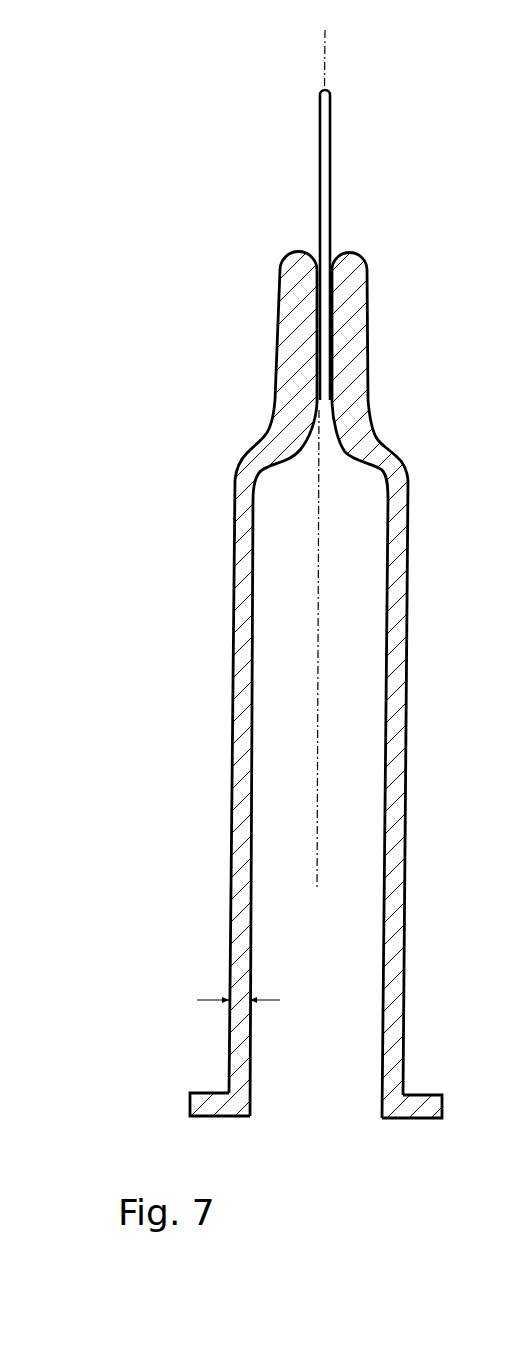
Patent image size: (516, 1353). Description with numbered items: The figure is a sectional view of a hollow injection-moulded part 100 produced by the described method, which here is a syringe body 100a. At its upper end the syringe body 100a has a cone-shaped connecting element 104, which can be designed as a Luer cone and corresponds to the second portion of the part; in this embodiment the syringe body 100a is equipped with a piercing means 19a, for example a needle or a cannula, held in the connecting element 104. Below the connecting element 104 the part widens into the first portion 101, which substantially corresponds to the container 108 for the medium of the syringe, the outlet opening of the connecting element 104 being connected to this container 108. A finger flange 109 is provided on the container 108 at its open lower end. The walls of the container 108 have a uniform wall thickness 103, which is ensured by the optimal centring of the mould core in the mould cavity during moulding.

The piercing means 19a is at (322, 158).
The injection-moulded part 100 is at (263, 685).
The syringe body 100a is at (315, 685).
The first portion 101 is at (250, 810).
The wall thickness 103 is at (197, 1000).
The cone-shaped connecting element 104 is at (337, 340).
The container 108 is at (355, 950).
The finger flange 109 is at (420, 1103).